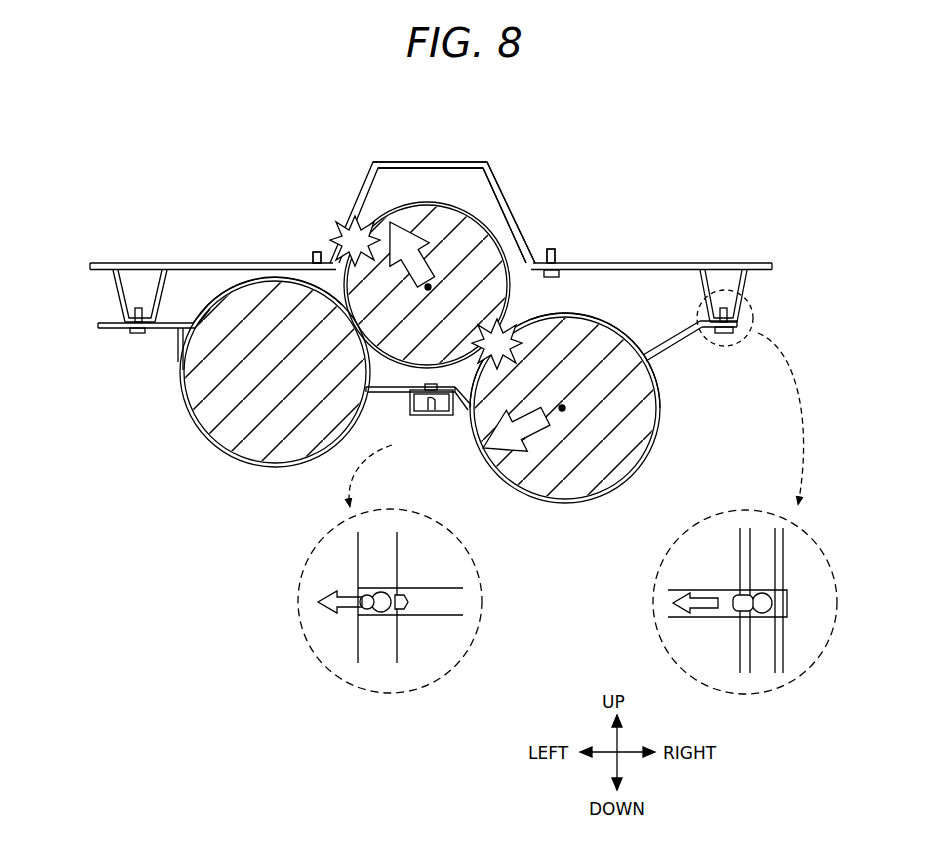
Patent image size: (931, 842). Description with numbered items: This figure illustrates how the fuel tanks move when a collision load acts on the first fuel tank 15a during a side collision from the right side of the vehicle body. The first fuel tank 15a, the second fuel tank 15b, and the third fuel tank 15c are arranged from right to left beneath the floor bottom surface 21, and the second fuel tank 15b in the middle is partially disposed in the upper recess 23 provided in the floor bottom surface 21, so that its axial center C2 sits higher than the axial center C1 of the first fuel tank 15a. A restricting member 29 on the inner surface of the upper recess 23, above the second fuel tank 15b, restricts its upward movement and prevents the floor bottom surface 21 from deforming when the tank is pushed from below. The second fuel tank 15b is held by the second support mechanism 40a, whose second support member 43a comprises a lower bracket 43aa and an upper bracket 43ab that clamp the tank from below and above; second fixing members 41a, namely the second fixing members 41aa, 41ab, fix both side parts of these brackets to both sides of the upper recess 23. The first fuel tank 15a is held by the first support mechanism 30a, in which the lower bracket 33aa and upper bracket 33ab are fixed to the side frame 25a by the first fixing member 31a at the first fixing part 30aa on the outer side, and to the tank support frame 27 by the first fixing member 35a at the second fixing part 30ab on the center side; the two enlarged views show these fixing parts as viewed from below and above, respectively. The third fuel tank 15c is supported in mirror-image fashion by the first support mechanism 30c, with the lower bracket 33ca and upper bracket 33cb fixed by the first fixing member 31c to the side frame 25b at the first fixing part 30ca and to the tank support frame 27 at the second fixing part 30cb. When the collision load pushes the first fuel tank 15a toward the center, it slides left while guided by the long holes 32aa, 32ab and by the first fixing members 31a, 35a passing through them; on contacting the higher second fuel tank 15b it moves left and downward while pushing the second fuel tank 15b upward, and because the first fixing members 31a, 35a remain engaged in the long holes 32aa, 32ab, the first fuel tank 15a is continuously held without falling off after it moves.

The floor bottom surface 21 is at (125, 263).
The upper recess 23 is at (393, 188).
The restricting member 29 is at (395, 164).
The second support member 43a is at (442, 164).
The upper bracket 43ab is at (431, 136).
The lower bracket 43aa is at (538, 250).
The second support mechanism 40a is at (490, 214).
The second fixing member 41a is at (315, 252).
The second fixing member 41aa is at (551, 249).
The second fixing member 41ab is at (245, 232).
The first fuel tank 15a is at (640, 455).
The second fuel tank 15b is at (455, 212).
The third fuel tank 15c is at (215, 452).
The lower bracket 33aa is at (663, 405).
The upper bracket 33ab is at (605, 325).
The lower bracket 33ca is at (182, 410).
The upper bracket 33cb is at (212, 296).
The side frame 25a is at (752, 276).
The side frame 25b is at (112, 275).
The first fixing member 31a is at (742, 296).
The first fixing member 31c is at (119, 296).
The first support mechanism 30a is at (690, 346).
The first fixing part 30aa is at (754, 335).
The second fixing part 30ab is at (453, 428).
The first support mechanism 30c is at (158, 340).
The first fixing part 30ca is at (125, 336).
The second fixing part 30cb is at (428, 448).
The tank support frame 27 is at (420, 425).
The first fixing member 35a is at (434, 420).
The long hole 32aa is at (745, 598).
The long hole 32ab is at (388, 597).
The axial center C1 is at (536, 432).
The axial center C2 is at (427, 285).